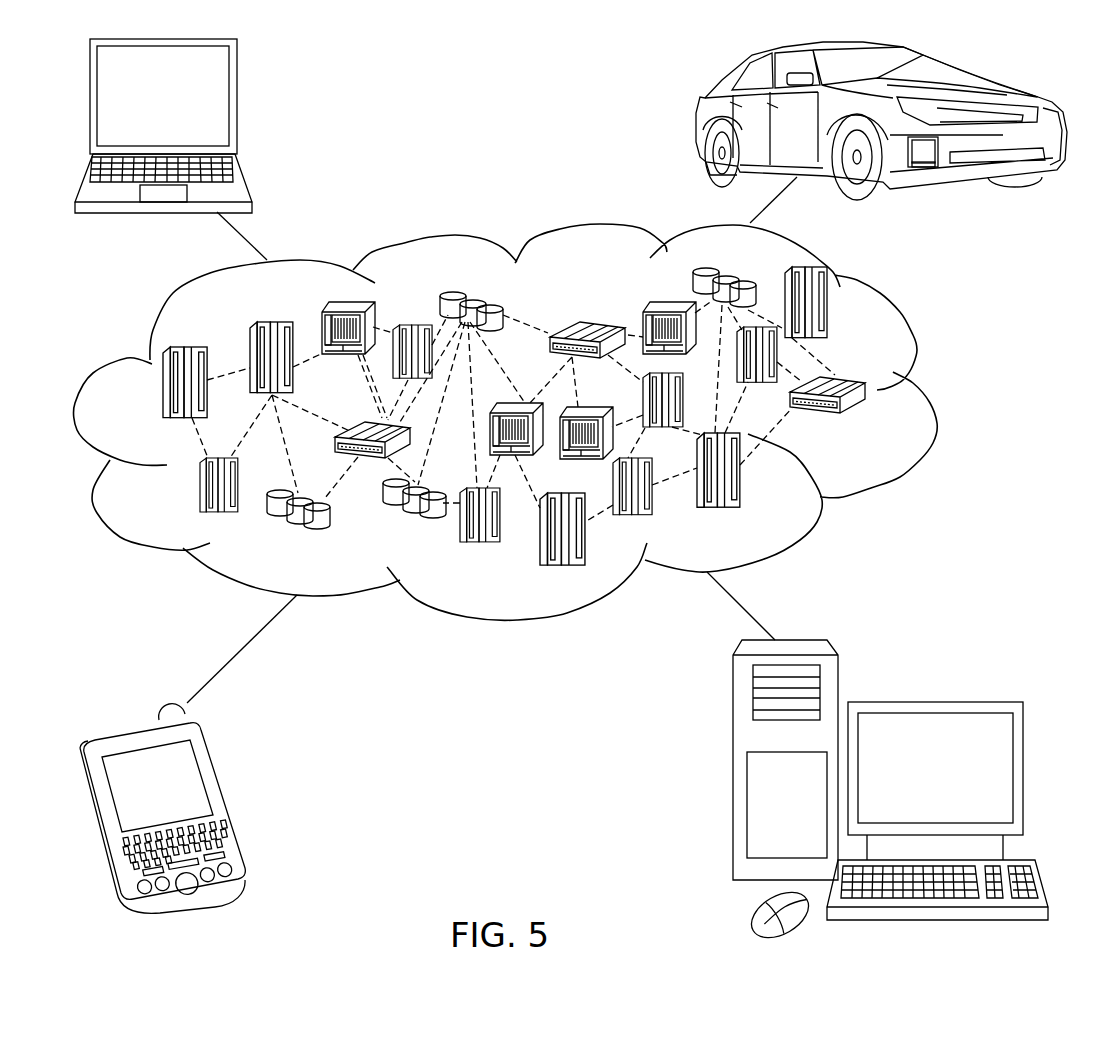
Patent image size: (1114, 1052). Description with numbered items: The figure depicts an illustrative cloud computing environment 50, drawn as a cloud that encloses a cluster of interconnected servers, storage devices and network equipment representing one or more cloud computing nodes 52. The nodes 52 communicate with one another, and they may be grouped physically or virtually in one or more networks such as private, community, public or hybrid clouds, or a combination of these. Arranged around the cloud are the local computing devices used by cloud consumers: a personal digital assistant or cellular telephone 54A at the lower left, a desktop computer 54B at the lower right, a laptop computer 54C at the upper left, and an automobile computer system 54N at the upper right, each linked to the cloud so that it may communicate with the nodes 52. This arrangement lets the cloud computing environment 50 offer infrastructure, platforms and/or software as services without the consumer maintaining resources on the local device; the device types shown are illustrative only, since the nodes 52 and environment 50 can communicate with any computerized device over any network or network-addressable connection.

The cloud computing environment 50 is at (930, 393).
The cloud computing nodes 52 is at (876, 428).
The personal digital assistant (PDA) or cellular telephone 54A is at (223, 798).
The desktop computer 54B is at (933, 702).
The laptop computer 54C is at (236, 103).
The automobile computer system 54N is at (700, 121).